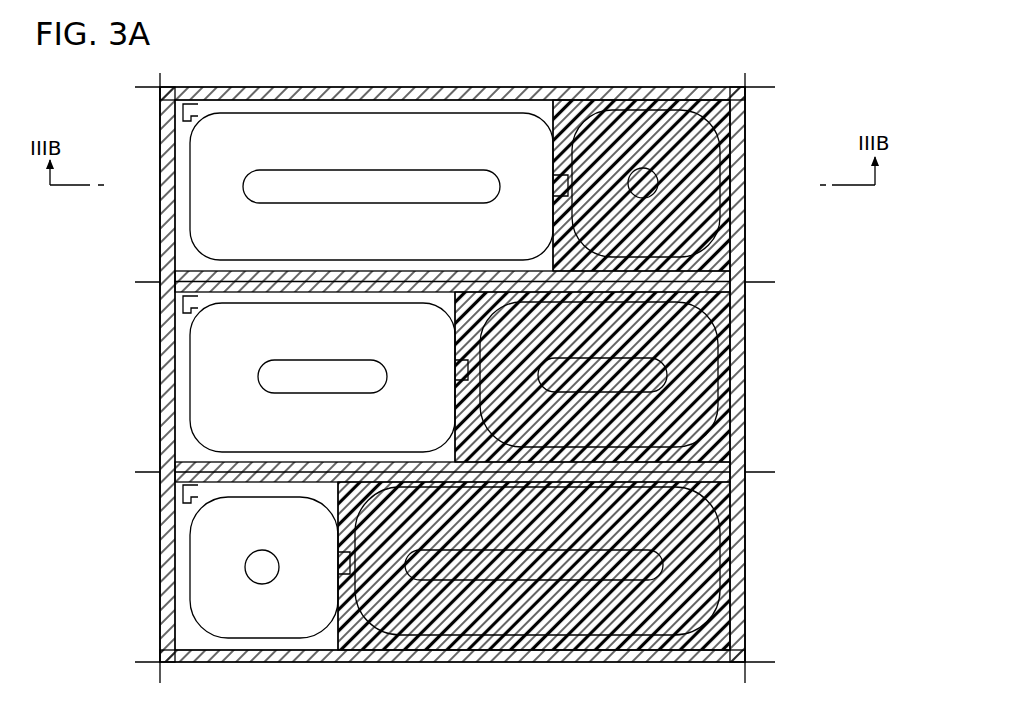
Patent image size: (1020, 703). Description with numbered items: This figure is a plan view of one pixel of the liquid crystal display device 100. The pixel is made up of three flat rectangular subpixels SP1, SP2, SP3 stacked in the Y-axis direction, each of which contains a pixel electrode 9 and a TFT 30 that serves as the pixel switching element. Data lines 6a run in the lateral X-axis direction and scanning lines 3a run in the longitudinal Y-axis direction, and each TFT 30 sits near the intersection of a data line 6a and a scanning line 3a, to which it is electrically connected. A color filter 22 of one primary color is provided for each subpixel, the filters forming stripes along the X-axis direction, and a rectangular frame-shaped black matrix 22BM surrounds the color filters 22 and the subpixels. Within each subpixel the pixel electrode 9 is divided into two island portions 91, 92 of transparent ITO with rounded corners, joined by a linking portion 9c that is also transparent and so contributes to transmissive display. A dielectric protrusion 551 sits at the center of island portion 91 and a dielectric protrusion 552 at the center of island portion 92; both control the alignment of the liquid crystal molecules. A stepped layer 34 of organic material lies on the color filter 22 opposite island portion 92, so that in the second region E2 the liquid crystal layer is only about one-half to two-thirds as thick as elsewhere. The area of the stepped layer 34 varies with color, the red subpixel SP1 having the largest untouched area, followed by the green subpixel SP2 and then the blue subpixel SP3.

The liquid crystal display device 100 is at (827, 101).
The black matrix 22BM is at (745, 655).
The data line 6a is at (135, 87).
The scanning line 3a is at (165, 672).
The pixel electrode 9 is at (585, 335).
The second region E2 is at (586, 108).
The island portion 92 is at (705, 122).
The dielectric protrusion 552 is at (705, 185).
The stepped layer 34 is at (553, 235).
The dielectric protrusion 551 is at (293, 172).
The linking portion 9c is at (555, 186).
The TFT 30 is at (200, 85).
The island portion 91 is at (207, 233).
The subpixel SP3 is at (158, 213).
The subpixel SP2 is at (158, 395).
The subpixel SP1 is at (158, 585).
The color filter 22 is at (380, 164).